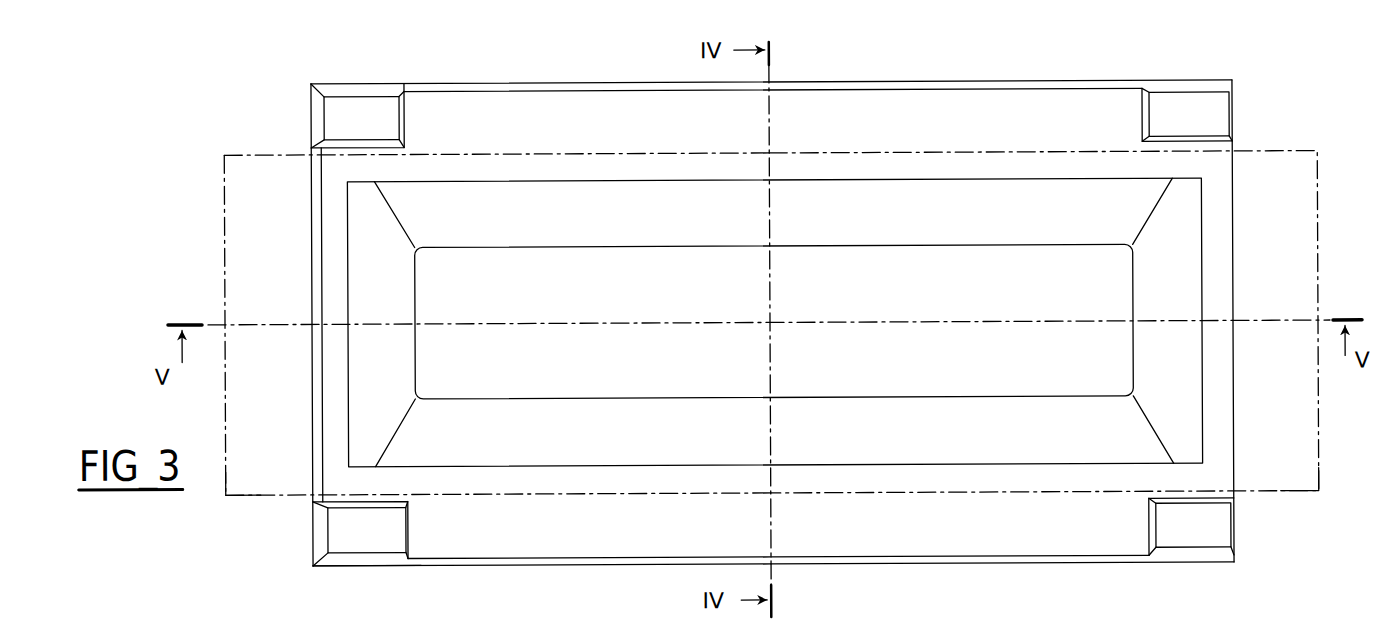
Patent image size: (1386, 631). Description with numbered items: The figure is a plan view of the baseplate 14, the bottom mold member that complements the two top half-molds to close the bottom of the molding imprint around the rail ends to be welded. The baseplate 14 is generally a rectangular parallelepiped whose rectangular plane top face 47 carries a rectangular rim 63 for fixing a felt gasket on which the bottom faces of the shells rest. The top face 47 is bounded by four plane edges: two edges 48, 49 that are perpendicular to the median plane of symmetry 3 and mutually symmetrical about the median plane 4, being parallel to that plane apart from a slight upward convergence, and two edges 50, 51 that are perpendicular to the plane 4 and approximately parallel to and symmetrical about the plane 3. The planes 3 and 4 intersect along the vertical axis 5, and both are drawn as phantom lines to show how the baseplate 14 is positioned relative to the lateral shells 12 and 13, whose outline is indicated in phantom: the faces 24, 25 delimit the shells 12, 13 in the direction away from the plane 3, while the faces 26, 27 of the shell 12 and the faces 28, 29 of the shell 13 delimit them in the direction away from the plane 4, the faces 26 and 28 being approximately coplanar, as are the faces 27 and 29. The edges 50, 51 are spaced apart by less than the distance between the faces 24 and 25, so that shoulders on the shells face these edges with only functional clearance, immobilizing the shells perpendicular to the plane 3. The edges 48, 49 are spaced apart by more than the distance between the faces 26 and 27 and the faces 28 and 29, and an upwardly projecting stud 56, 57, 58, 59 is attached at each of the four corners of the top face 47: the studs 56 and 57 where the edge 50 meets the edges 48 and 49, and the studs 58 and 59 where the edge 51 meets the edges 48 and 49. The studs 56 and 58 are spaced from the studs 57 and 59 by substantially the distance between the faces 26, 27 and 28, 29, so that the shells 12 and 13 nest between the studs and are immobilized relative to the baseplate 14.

The median plane of symmetry 3 is at (778, 573).
The median plane 4 is at (212, 323).
The vertical axis 5 is at (778, 321).
The lateral shell 12 is at (258, 500).
The lateral shell 13 is at (1271, 472).
The baseplate 14 is at (355, 571).
The plane face 24 is at (223, 190).
The plane face 25 is at (1322, 257).
The face 26 is at (458, 493).
The face 27 is at (508, 154).
The face 28 is at (853, 491).
The face 29 is at (883, 154).
The top face 47 is at (1023, 538).
The edge 48 is at (945, 565).
The edge 49 is at (925, 82).
The edge 50 is at (320, 528).
The edge 51 is at (1235, 528).
The stud 56 is at (378, 540).
The stud 57 is at (358, 107).
The stud 58 is at (1193, 530).
The stud 59 is at (1195, 105).
The rectangular rim 63 is at (670, 230).